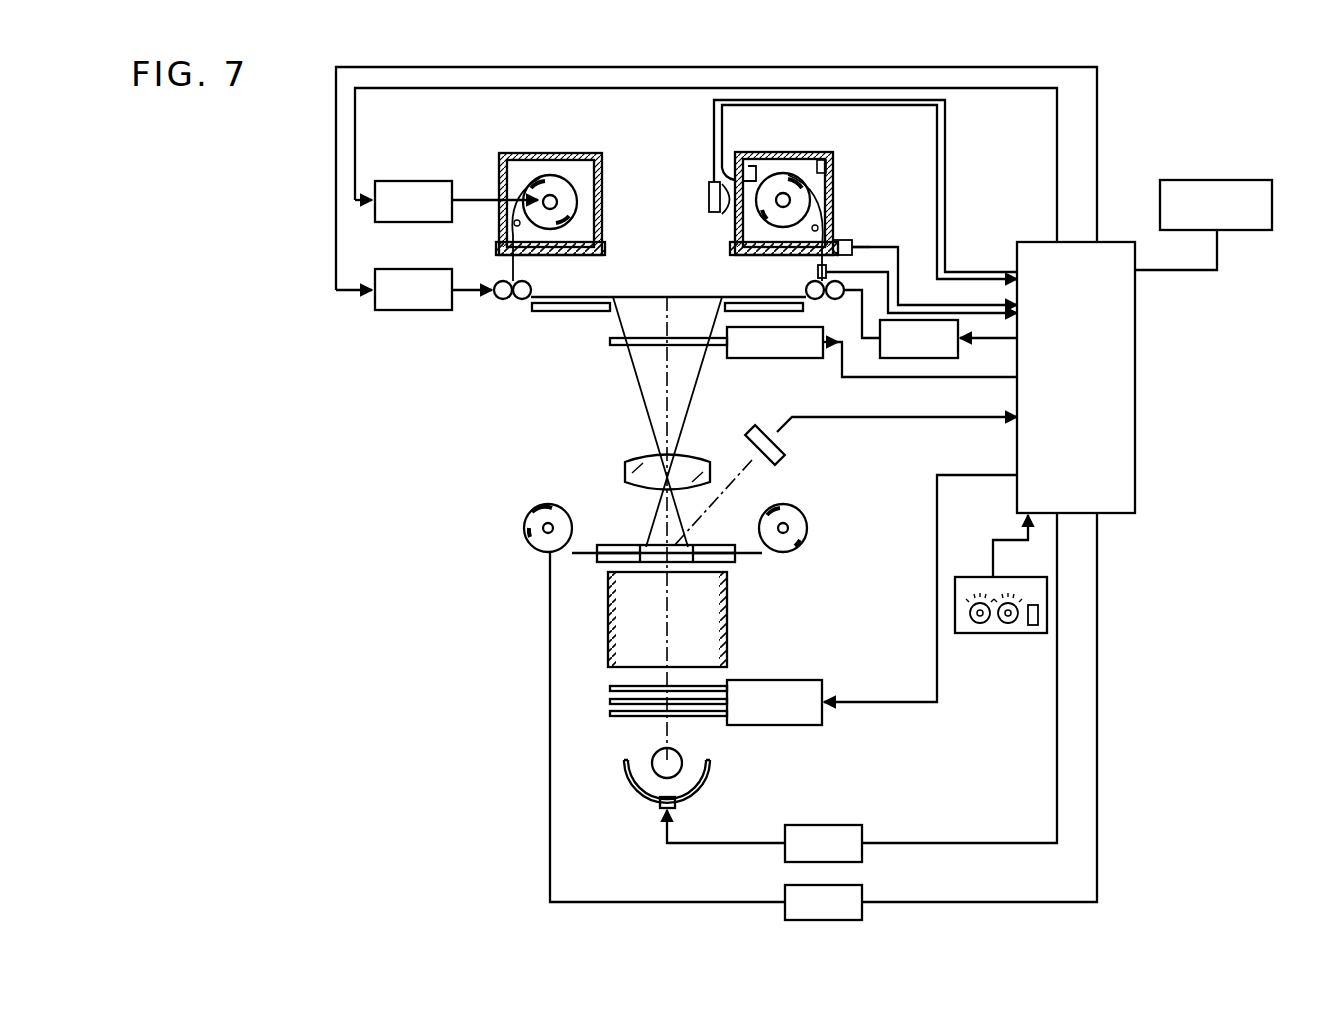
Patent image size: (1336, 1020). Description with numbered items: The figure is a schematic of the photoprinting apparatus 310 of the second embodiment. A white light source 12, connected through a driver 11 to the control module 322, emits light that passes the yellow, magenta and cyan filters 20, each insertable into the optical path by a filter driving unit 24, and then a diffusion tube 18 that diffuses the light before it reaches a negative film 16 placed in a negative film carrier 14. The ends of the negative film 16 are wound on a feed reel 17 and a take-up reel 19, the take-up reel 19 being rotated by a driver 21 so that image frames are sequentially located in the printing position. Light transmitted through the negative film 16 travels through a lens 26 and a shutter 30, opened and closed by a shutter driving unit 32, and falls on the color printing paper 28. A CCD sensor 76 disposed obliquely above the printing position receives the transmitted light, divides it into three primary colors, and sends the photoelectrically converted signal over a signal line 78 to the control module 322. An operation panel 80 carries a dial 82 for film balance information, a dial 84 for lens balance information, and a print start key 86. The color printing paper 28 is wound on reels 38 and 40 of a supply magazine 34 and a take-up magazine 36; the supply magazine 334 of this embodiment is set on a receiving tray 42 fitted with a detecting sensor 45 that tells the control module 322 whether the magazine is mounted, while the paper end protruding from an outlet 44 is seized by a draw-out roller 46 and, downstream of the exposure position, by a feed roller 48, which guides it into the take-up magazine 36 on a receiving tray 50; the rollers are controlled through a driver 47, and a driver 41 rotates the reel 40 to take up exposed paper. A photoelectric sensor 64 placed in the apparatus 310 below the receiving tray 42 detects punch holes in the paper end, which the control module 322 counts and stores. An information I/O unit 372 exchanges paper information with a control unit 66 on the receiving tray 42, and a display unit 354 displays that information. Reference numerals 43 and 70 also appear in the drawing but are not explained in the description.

The driver 11 is at (846, 825).
The white light source 12 is at (706, 766).
The negative film carrier 14 is at (736, 562).
The negative film 16 is at (575, 554).
The feed reel 17 is at (788, 528).
The diffusion tube 18 is at (728, 632).
The take-up reel 19 is at (553, 528).
The filters 20 is at (603, 681).
The driver 21 is at (862, 886).
The filter driving unit 24 is at (790, 725).
The lens 26 is at (700, 455).
The color printing paper 28 is at (750, 302).
The shutter 30 is at (612, 346).
The shutter driving unit 32 is at (790, 358).
The supply magazine 34 is at (741, 164).
The take-up magazine 36 is at (602, 194).
The reel 38 is at (783, 193).
The reel 40 is at (562, 183).
The driver 41 is at (423, 181).
The receiving tray 42 is at (852, 241).
The take-up drive 43 is at (958, 352).
The outlet 44 is at (857, 263).
The detecting sensor 45 is at (891, 240).
The draw-out roller 46 is at (830, 299).
The driver 47 is at (436, 310).
The feed roller 48 is at (507, 300).
The receiving tray 50 is at (605, 244).
The photoelectric sensor 64 is at (817, 272).
The control unit 66 is at (712, 180).
The cassette latch 70 is at (826, 162).
The CCD sensor 76 is at (787, 453).
The signal line 78 is at (890, 418).
The operation panel 80 is at (963, 577).
The dial 82 is at (975, 623).
The dial 84 is at (1006, 623).
The print start key 86 is at (1033, 625).
The photoprinting apparatus 310 is at (406, 452).
The control module 322 is at (1128, 513).
The supply magazine 334 is at (833, 196).
The display unit 354 is at (1217, 180).
The information I/O unit 372 is at (720, 204).